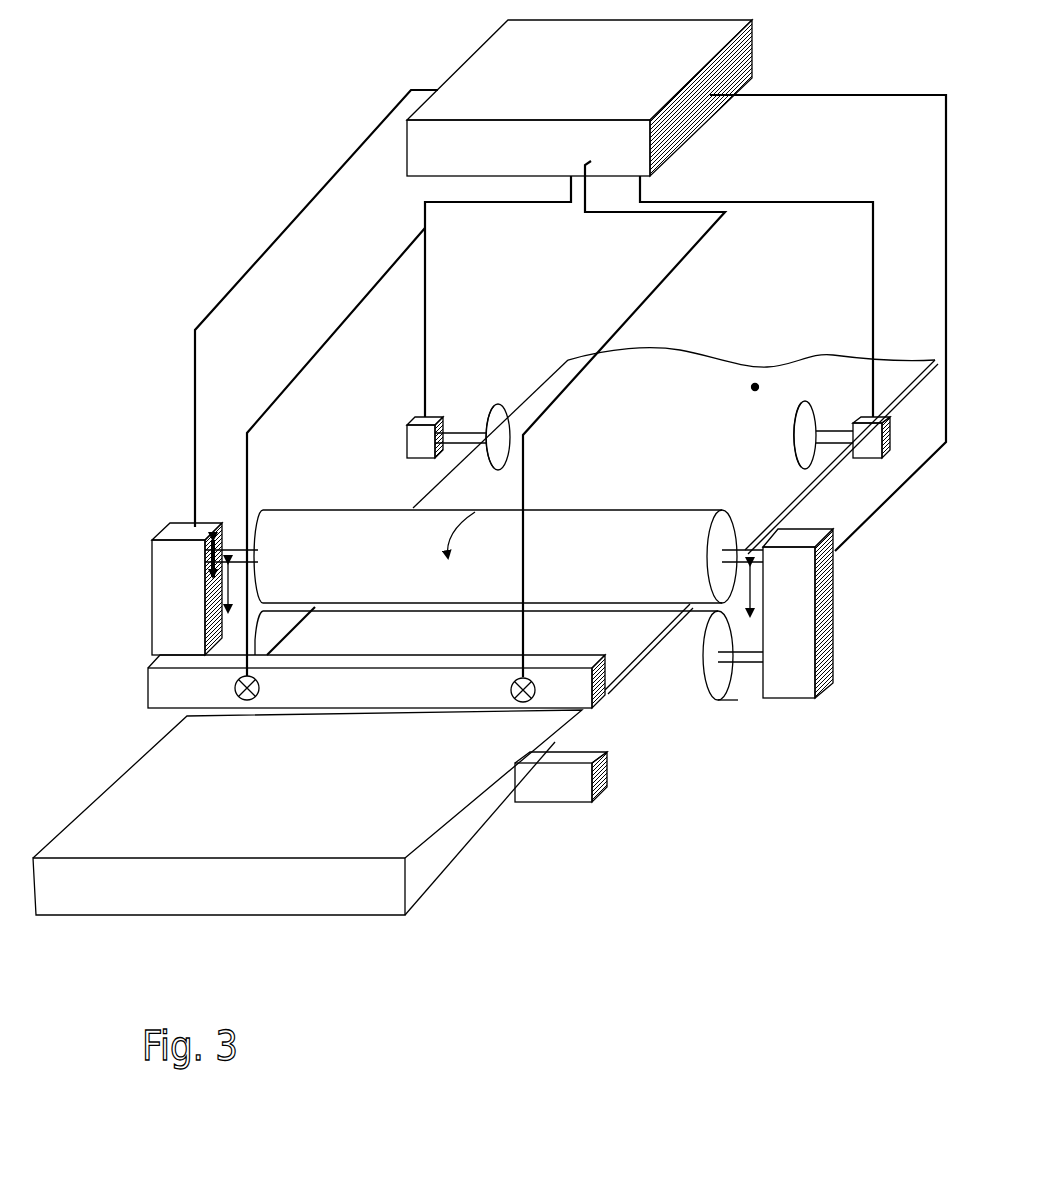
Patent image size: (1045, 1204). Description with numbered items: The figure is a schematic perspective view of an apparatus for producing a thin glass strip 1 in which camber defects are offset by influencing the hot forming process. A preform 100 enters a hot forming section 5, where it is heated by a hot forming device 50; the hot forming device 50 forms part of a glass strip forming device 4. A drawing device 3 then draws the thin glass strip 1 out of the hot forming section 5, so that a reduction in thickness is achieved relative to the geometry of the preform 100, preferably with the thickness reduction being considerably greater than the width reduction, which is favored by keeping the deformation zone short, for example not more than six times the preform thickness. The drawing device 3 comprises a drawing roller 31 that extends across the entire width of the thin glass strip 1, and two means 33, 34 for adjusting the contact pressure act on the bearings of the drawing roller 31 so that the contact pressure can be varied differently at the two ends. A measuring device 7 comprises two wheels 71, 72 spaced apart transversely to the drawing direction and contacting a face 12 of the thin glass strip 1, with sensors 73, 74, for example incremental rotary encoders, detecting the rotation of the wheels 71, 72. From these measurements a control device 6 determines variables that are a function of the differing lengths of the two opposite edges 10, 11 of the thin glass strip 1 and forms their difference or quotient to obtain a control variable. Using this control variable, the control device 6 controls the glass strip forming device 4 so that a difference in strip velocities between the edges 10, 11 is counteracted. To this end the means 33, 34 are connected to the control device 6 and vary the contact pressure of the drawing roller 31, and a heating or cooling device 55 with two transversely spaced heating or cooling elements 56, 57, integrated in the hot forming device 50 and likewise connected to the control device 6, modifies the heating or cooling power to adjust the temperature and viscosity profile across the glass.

The thin glass strip 1 is at (556, 361).
The drawing device 3 is at (795, 735).
The glass strip forming device 4 is at (148, 672).
The hot forming section 5 is at (607, 753).
The control device 6 is at (482, 43).
The measuring device 7 is at (380, 443).
The edge 10 is at (630, 664).
The edge 11 is at (447, 476).
The face 12 is at (755, 385).
The drawing roller 31 is at (640, 510).
The means for adjusting the contact pressure 33 is at (823, 695).
The means for adjusting the contact pressure 34 is at (160, 525).
The hot forming device 50 is at (148, 695).
The heating or cooling device 55 is at (262, 704).
The heating or cooling element 56 is at (242, 702).
The heating or cooling element 57 is at (552, 740).
The wheel 71 is at (497, 403).
The wheel 72 is at (805, 400).
The sensor 73 is at (407, 427).
The sensor 74 is at (875, 458).
The preform 100 is at (420, 875).